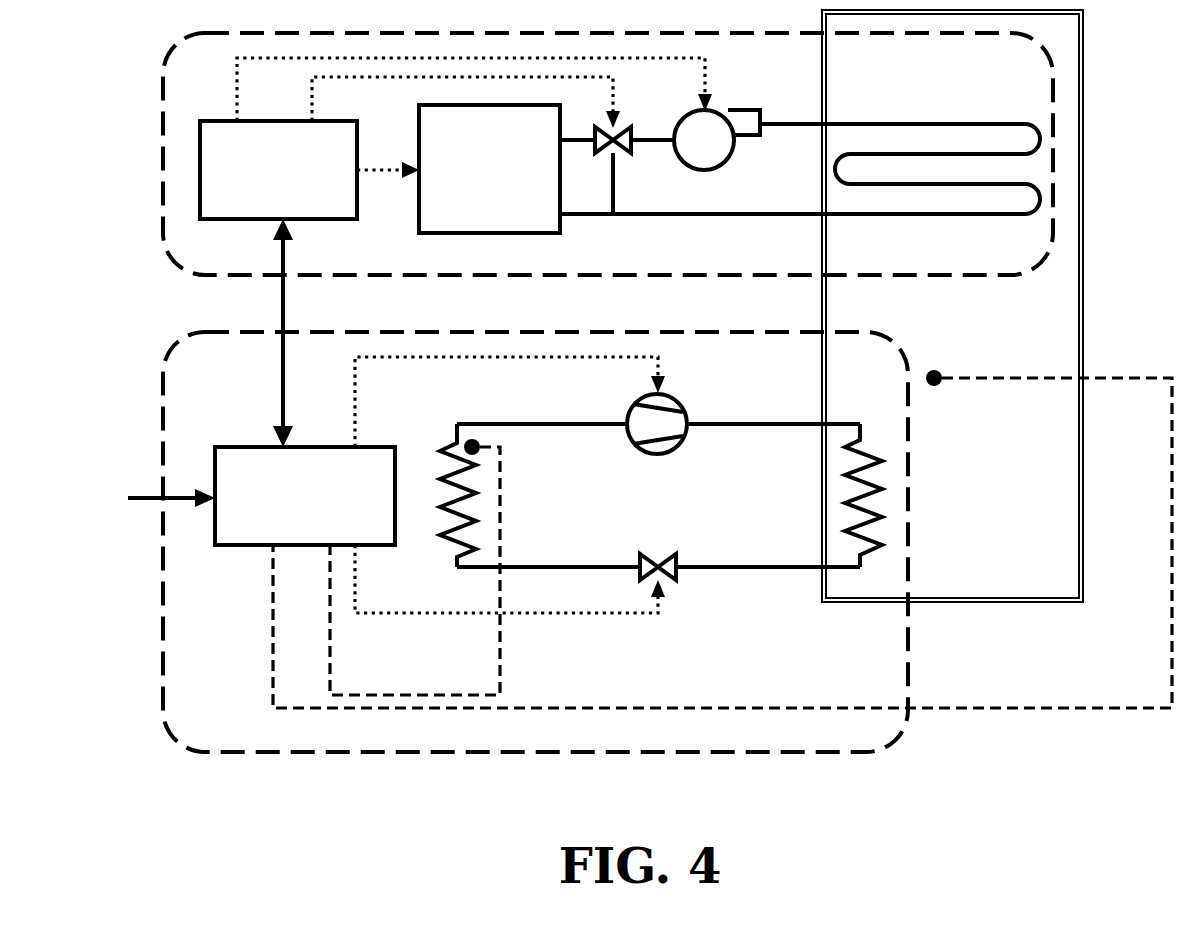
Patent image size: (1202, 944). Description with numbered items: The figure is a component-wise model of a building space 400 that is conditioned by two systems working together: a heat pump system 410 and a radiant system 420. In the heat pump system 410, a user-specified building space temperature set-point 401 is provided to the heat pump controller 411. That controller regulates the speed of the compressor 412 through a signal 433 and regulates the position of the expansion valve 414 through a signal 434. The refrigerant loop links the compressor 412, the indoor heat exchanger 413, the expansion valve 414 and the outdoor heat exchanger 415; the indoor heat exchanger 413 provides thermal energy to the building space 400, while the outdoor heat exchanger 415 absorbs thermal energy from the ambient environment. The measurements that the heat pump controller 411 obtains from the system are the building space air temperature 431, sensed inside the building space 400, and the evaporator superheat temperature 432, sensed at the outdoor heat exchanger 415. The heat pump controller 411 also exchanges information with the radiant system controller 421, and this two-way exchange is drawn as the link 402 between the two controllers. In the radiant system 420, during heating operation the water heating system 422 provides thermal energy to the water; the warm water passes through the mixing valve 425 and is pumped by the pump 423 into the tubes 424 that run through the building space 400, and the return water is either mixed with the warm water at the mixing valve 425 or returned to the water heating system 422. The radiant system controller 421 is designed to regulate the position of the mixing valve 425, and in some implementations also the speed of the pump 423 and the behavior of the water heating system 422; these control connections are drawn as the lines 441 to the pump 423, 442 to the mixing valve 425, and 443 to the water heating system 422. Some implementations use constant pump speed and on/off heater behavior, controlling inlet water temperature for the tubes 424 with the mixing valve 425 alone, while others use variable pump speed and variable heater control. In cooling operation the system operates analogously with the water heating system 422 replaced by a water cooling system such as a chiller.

The building space 400 is at (952, 306).
The building space temperature set-point 401 is at (138, 496).
The communication link 402 is at (311, 333).
The heat pump system 410 is at (535, 542).
The heat pump controller 411 is at (305, 496).
The compressor 412 is at (658, 413).
The indoor heat exchanger 413 is at (860, 474).
The expansion valve 414 is at (658, 547).
The outdoor heat exchanger 415 is at (463, 446).
The radiant system 420 is at (608, 154).
The radiant system controller 421 is at (278, 170).
The water heating system 422 is at (489, 169).
The pump 423 is at (717, 140).
The tubes 424 is at (800, 150).
The mixing valve 425 is at (619, 146).
The building space air temperature 431 is at (722, 523).
The evaporator superheat temperature 432 is at (500, 451).
The signal 433 is at (510, 402).
The signal 434 is at (510, 598).
The pump control signal 441 is at (506, 80).
The valve control signal 442 is at (496, 99).
The heat exchanger control signal 443 is at (388, 155).